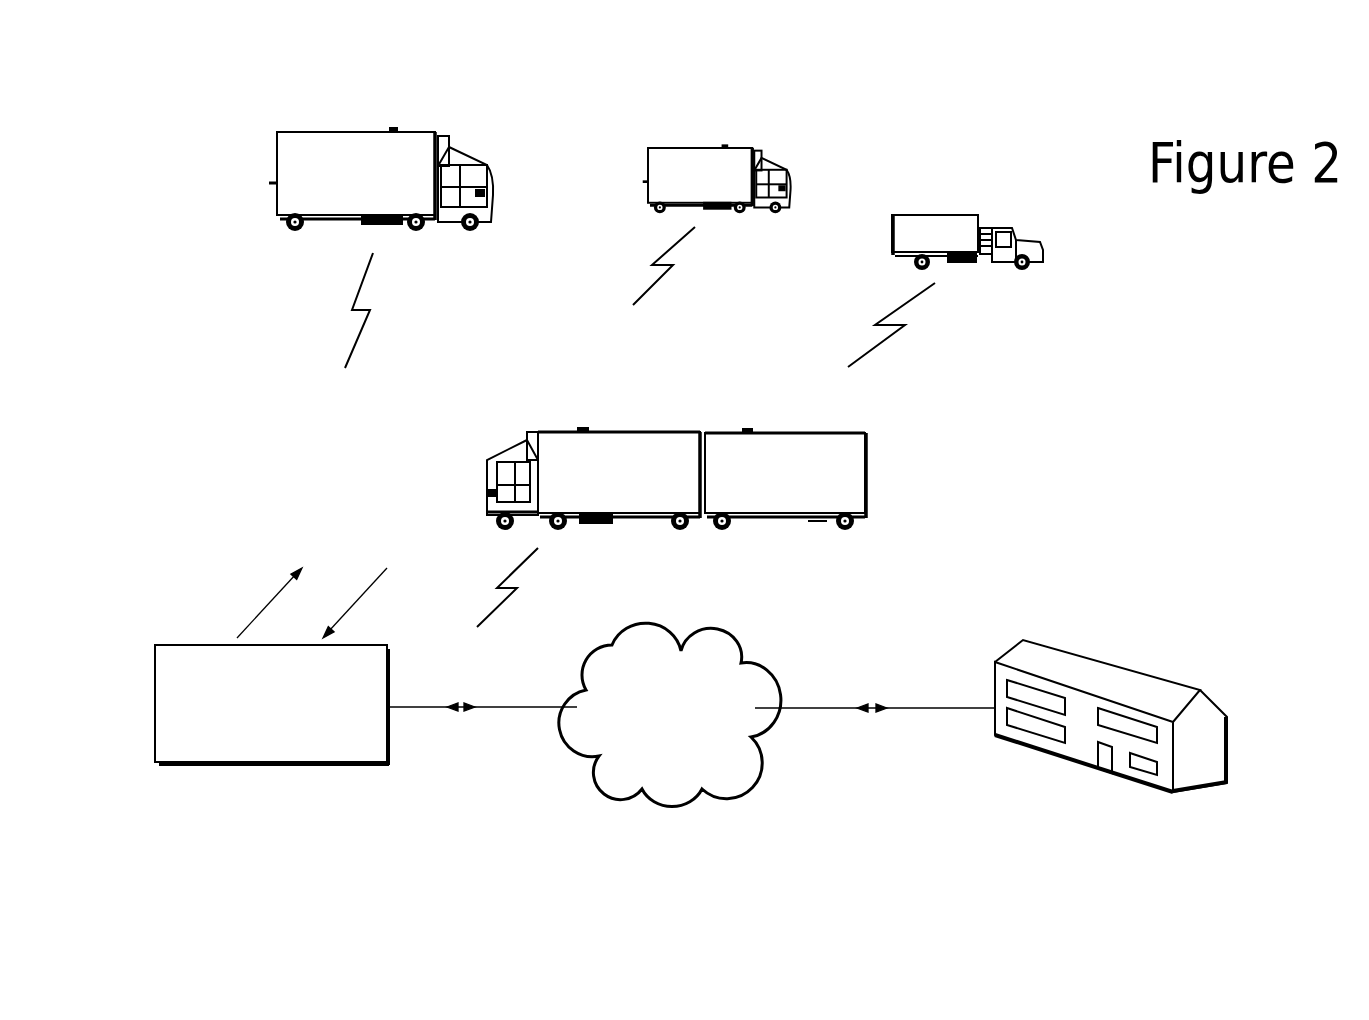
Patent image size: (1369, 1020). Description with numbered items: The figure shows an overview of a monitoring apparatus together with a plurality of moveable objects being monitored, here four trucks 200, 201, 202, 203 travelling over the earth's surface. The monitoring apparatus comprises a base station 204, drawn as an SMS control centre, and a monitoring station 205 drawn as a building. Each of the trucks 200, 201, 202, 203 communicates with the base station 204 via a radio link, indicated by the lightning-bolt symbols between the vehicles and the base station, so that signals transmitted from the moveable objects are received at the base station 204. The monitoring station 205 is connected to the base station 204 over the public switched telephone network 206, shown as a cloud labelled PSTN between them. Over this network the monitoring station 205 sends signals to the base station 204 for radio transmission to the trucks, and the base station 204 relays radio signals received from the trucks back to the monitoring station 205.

The truck 200 is at (353, 148).
The truck 201 is at (675, 170).
The truck 202 is at (950, 228).
The truck 203 is at (612, 448).
The base station 204 is at (205, 747).
The monitoring station 205 is at (1112, 682).
The public switched telephone network 206 is at (620, 763).